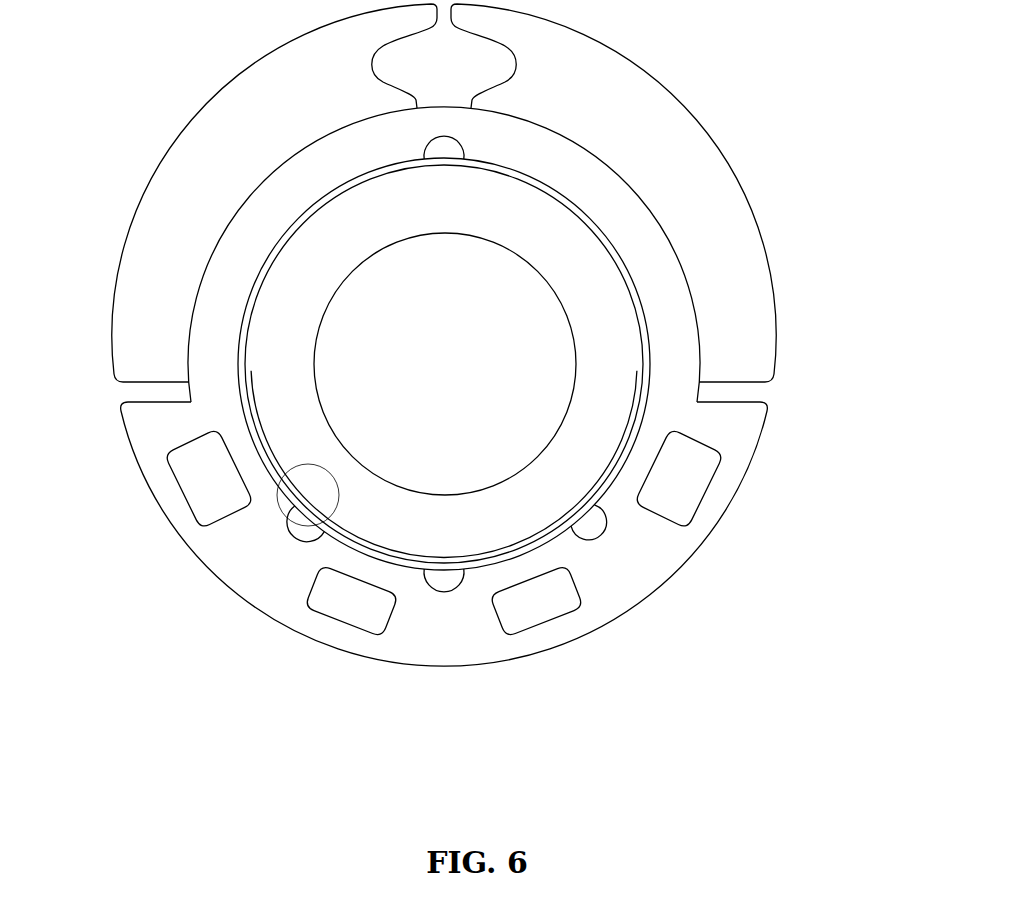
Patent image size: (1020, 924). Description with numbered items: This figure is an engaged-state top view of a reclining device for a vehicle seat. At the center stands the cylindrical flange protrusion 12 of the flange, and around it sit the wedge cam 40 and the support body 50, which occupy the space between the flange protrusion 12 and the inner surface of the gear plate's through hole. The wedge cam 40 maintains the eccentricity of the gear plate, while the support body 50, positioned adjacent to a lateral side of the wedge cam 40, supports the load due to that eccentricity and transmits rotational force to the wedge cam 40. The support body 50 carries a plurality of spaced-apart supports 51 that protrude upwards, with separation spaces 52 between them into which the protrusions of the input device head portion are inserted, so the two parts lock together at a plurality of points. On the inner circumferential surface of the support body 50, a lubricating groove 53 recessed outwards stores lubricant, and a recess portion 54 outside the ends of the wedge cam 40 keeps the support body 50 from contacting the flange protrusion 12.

The flange protrusion 12 is at (612, 317).
The wedge cam 40 is at (202, 150).
The support body 50 is at (487, 612).
The supports 51 is at (685, 483).
The separation spaces 52 is at (603, 577).
The lubricating groove 53 is at (605, 532).
The recess portion 54 is at (327, 542).